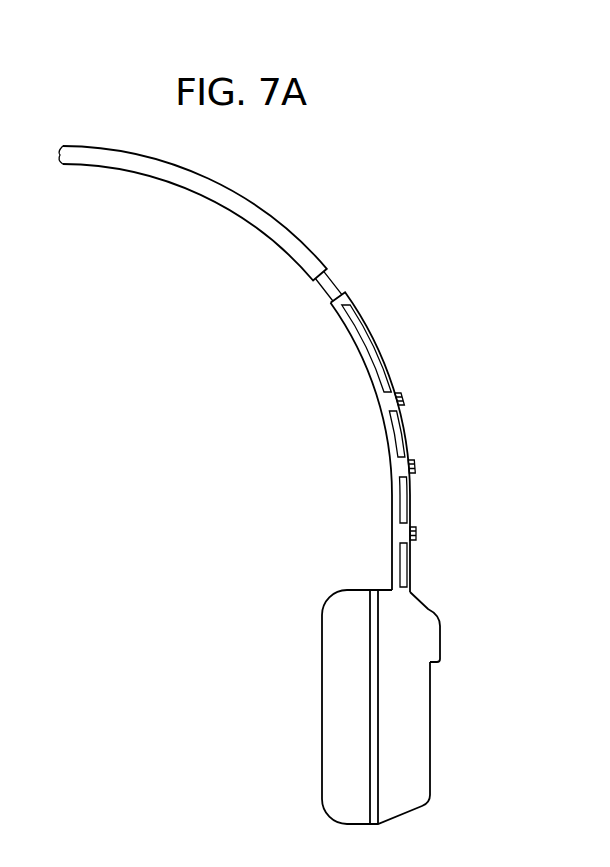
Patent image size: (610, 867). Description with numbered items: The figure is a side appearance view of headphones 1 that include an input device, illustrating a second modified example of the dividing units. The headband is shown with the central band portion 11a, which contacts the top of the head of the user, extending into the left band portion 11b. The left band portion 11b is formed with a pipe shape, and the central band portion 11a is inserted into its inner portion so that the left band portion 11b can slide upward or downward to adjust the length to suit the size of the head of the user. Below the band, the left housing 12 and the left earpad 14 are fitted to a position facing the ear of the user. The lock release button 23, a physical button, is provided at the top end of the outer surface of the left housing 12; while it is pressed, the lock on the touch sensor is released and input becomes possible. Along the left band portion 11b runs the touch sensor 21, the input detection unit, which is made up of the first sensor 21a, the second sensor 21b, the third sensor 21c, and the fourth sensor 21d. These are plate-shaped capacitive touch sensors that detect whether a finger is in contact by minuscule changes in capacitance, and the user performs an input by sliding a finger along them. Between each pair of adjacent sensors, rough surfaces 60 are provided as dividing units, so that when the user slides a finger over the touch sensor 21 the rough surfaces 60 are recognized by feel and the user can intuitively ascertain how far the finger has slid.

The headphones 1 is at (436, 172).
The central band portion 11a is at (297, 238).
The left band portion 11b is at (361, 316).
The left housing 12 is at (431, 740).
The left earpad 14 is at (322, 727).
The touch sensor 21 is at (525, 330).
The first sensor 21a is at (379, 358).
The second sensor 21b is at (406, 440).
The third sensor 21c is at (409, 505).
The fourth sensor 21d is at (409, 568).
The lock release button 23 is at (441, 643).
The rough surface 60 is at (403, 399).